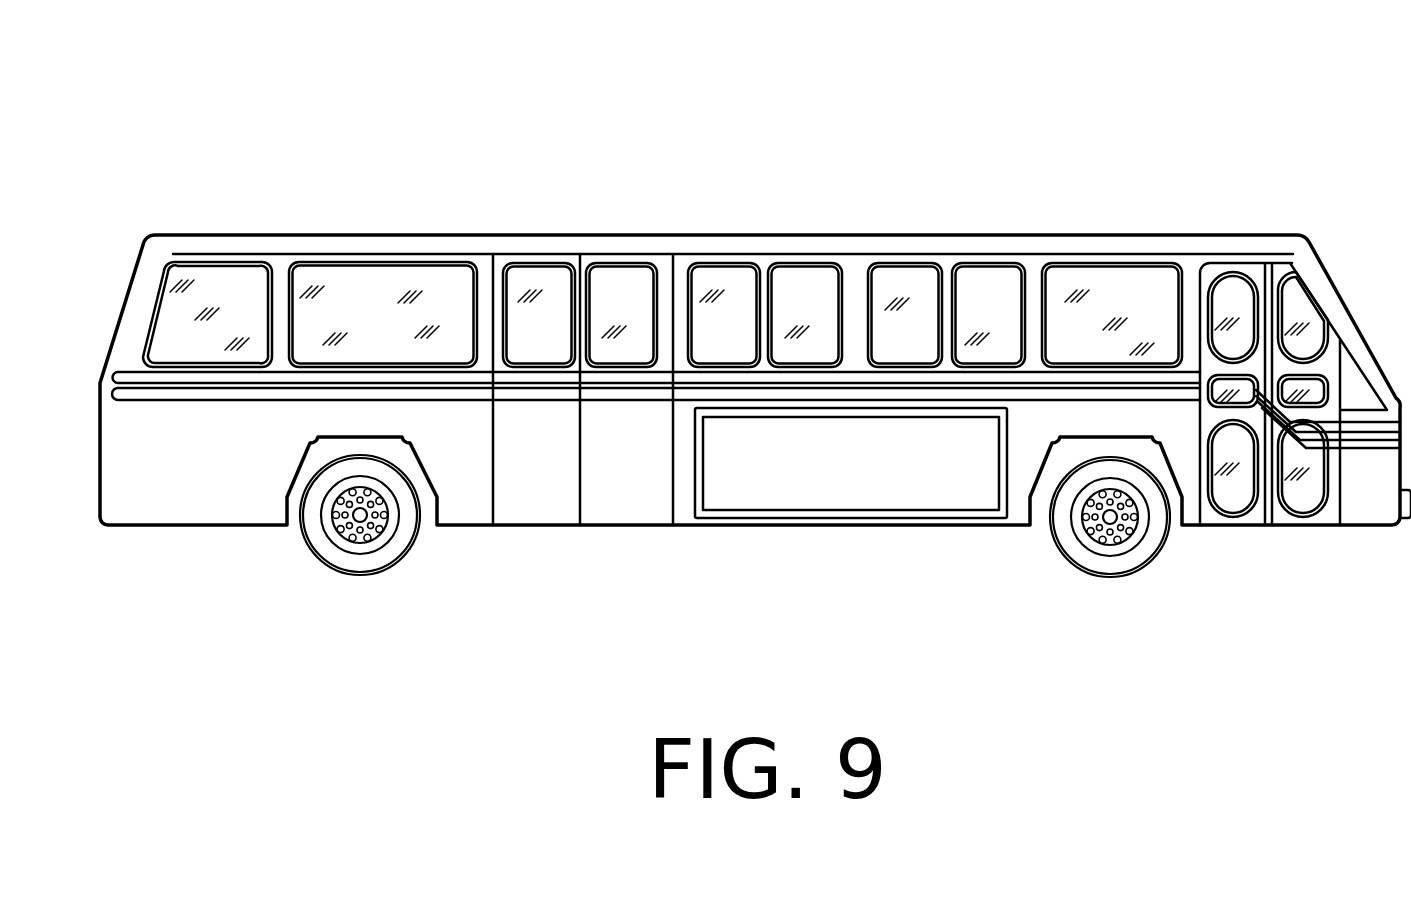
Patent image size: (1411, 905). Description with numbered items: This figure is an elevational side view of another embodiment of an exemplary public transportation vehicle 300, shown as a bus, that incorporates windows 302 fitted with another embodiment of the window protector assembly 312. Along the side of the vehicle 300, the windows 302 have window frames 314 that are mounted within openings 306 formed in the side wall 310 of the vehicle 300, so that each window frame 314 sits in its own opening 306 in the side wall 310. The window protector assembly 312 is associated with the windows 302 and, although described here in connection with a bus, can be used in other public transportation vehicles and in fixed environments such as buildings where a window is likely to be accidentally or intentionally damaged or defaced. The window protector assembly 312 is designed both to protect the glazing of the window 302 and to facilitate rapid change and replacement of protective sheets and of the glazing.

The public transportation vehicle 300 is at (387, 163).
The windows 302 is at (438, 307).
The openings 306 is at (282, 263).
The side wall 310 is at (271, 380).
The window protector assembly 312 is at (393, 335).
The window frames 314 is at (317, 267).